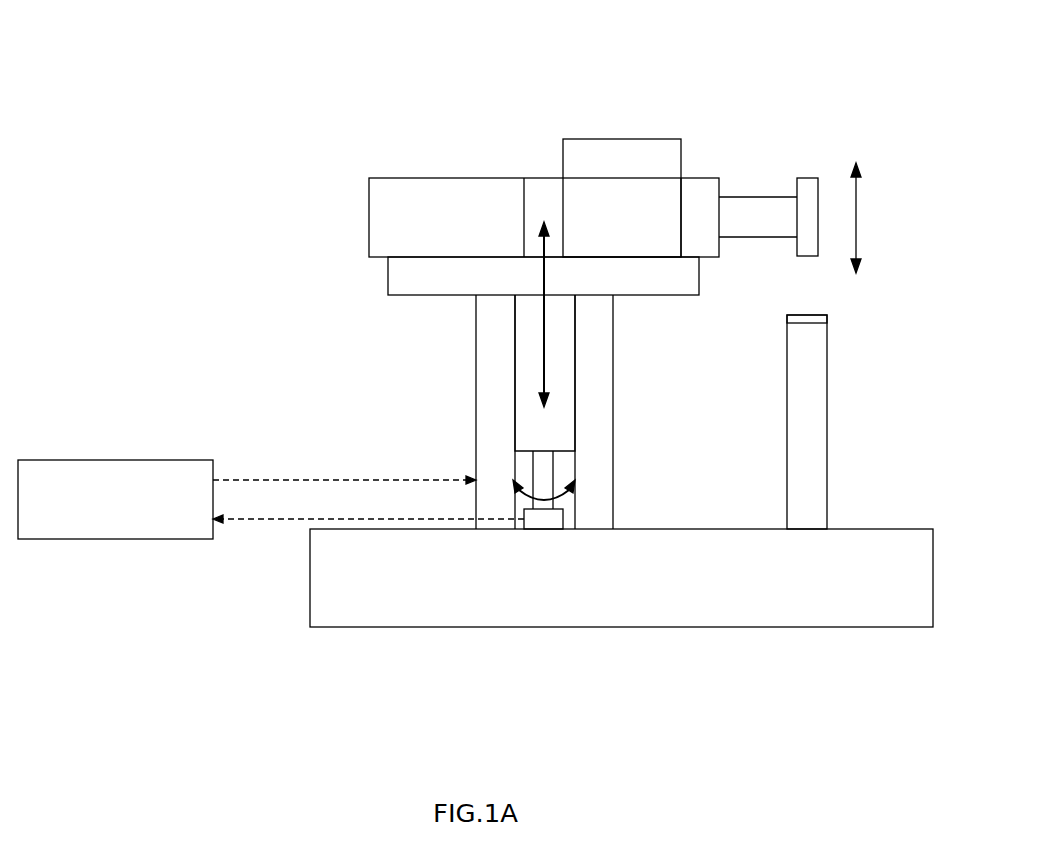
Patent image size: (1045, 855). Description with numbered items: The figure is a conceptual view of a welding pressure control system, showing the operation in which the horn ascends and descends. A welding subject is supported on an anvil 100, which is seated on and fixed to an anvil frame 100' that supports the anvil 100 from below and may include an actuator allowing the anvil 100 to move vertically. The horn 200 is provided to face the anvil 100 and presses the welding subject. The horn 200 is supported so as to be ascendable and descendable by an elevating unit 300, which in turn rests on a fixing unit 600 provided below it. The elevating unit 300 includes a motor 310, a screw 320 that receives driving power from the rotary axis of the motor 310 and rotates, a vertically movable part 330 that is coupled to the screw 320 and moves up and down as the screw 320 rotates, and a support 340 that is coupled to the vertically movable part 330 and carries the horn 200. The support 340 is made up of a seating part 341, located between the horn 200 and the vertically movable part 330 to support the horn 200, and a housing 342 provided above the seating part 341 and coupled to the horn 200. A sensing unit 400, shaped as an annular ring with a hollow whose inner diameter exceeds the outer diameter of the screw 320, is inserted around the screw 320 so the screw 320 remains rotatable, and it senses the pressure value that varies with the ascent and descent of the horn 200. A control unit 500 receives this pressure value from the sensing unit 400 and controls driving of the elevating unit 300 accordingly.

The anvil 100 is at (846, 318).
The anvil frame 100' is at (849, 422).
The horn 200 is at (757, 197).
The elevating unit 300 is at (136, 63).
The motor 310 is at (593, 411).
The screw 320 is at (540, 475).
The vertically movable part 330 is at (515, 372).
The support 340 is at (623, 73).
The seating part 341 is at (466, 277).
The housing 342 is at (620, 139).
The sensing unit 400 is at (544, 520).
The control unit 500 is at (135, 528).
The fixing unit 600 is at (622, 607).